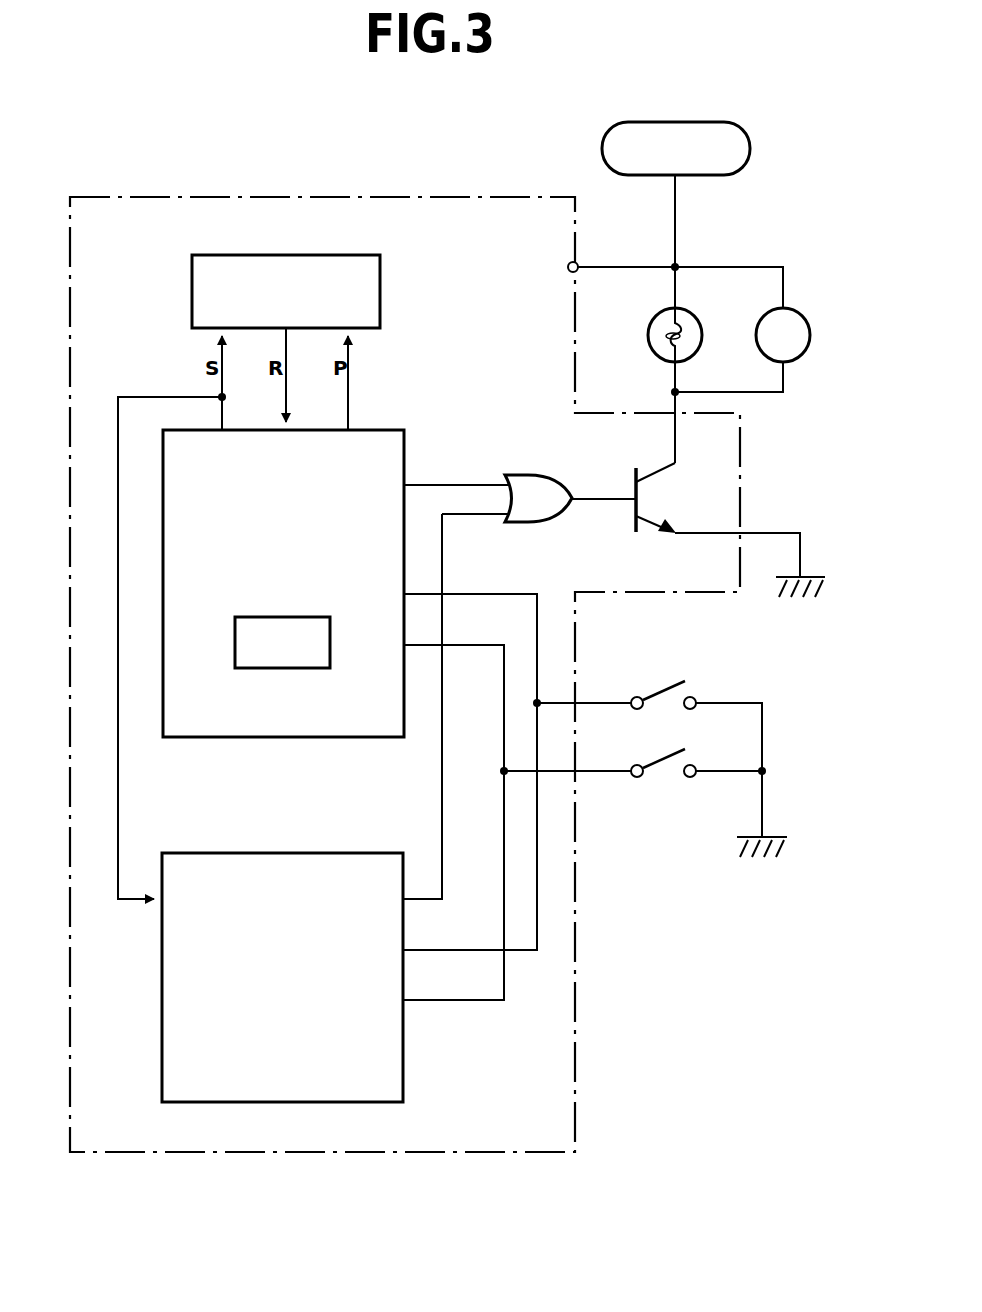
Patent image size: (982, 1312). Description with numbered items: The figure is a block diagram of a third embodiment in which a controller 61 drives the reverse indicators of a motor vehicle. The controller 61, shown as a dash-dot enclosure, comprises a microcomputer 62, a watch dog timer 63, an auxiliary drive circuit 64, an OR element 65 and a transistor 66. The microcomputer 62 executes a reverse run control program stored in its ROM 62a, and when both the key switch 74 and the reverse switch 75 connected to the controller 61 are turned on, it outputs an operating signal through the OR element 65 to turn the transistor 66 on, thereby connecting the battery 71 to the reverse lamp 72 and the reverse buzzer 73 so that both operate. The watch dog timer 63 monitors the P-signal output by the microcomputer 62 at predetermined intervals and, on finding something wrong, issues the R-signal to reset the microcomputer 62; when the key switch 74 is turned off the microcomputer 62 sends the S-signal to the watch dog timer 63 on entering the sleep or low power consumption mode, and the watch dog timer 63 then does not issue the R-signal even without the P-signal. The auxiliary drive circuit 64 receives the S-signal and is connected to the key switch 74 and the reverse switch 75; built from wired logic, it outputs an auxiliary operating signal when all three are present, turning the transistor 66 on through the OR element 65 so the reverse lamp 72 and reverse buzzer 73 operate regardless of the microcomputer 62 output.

The controller 61 is at (335, 188).
The microcomputer 62 is at (398, 430).
The ROM 62a is at (305, 617).
The watch dog timer 63 is at (382, 260).
The auxiliary drive circuit 64 is at (304, 853).
The OR element 65 is at (540, 473).
The transistor 66 is at (634, 520).
The battery 71 is at (720, 122).
The reverse lamp 72 is at (653, 318).
The reverse buzzer 73 is at (758, 321).
The key switch 74 is at (662, 685).
The reverse switch 75 is at (663, 774).